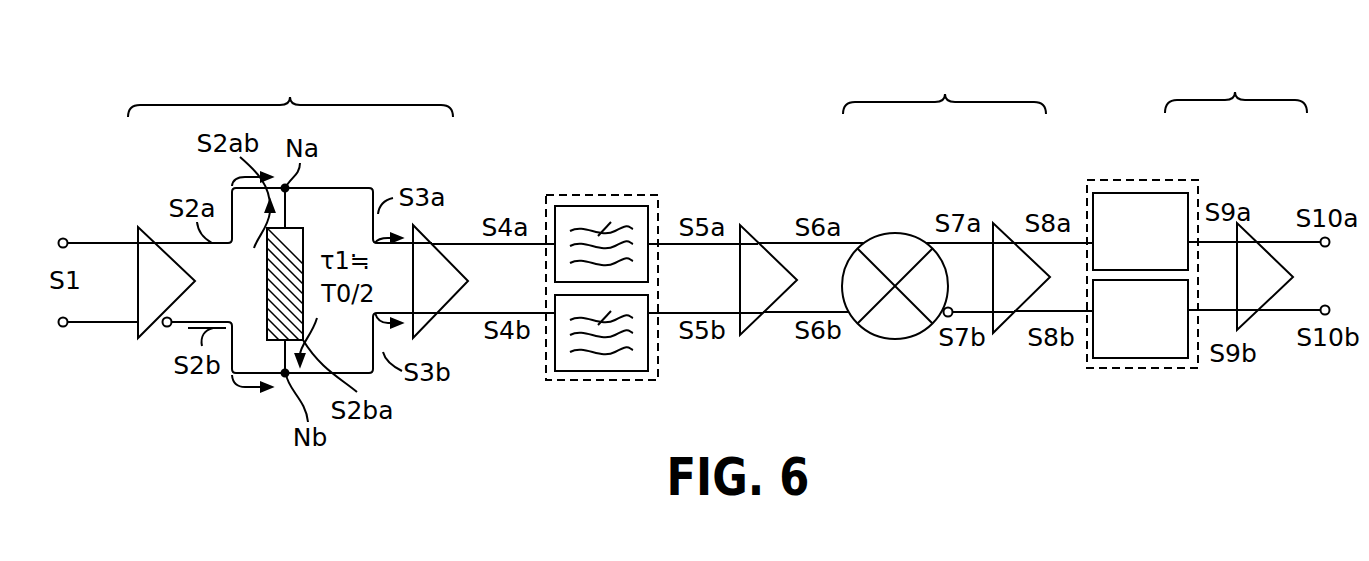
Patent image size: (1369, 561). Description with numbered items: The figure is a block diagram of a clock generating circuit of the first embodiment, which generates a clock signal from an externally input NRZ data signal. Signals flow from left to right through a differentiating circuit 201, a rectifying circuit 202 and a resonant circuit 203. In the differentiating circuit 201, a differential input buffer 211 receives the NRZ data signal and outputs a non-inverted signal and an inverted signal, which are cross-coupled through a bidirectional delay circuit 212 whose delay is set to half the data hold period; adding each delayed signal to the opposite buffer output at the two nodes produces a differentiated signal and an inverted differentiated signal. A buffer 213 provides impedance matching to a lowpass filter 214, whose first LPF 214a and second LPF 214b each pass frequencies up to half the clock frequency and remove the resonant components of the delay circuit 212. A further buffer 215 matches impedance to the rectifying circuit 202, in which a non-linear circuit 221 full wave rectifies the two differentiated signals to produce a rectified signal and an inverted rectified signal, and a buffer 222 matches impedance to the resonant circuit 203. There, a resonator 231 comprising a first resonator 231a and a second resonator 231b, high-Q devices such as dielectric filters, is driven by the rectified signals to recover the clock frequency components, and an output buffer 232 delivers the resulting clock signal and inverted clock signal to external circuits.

The differentiating circuit 201 is at (290, 87).
The differential input buffer 211 is at (152, 242).
The delay circuit 212 is at (298, 227).
The buffer 213 is at (438, 244).
The lowpass filter 214 is at (648, 195).
The first LPF 214a is at (588, 206).
The second LPF 214b is at (597, 371).
The buffer 215 is at (750, 228).
The rectifying circuit 202 is at (944, 82).
The non-linear circuit 221 is at (877, 233).
The buffer 222 is at (1003, 225).
The resonant circuit 203 is at (1236, 81).
The resonator 231 is at (1188, 180).
The first resonator 231a is at (1130, 193).
The second resonator 231b is at (1137, 358).
The output buffer 232 is at (1253, 238).